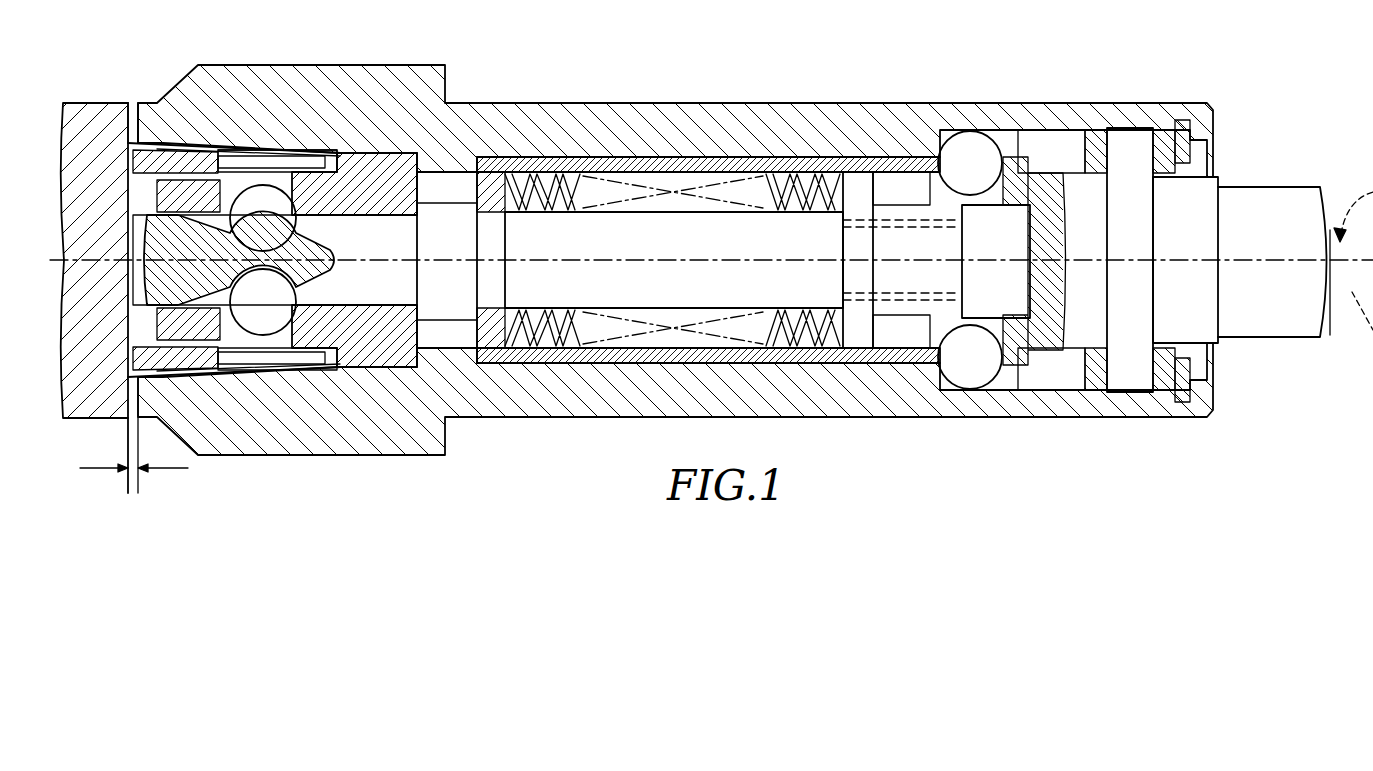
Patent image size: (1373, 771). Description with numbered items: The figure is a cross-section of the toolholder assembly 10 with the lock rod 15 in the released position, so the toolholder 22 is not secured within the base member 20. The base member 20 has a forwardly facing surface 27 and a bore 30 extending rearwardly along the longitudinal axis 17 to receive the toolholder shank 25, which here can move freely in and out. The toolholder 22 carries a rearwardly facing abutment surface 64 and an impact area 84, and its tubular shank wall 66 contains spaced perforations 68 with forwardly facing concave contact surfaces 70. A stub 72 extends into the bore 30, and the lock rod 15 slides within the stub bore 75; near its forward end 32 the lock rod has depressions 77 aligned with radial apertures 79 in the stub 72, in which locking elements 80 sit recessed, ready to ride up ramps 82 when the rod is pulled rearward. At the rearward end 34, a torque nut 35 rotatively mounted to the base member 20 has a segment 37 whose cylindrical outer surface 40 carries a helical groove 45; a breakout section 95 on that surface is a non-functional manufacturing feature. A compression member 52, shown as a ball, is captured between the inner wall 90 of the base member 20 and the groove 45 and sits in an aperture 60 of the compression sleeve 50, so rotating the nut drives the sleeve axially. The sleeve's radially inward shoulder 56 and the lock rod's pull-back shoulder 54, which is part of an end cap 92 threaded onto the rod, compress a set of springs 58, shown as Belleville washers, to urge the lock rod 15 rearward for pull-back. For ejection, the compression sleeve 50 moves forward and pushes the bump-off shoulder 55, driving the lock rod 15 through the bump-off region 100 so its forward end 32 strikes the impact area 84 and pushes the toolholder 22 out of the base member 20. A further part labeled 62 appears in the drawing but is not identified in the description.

The toolholder assembly 10 is at (737, 42).
The lock rod 15 is at (605, 235).
The longitudinal axis 17 is at (461, 245).
The base member 20 is at (645, 104).
The toolholder 22 is at (127, 104).
The toolholder shank 25 is at (283, 157).
The forwardly facing surface 27 is at (137, 108).
The bore 30 is at (160, 140).
The forward end 32 is at (118, 283).
The rearward end 34 is at (893, 232).
The torque nut 35 is at (1263, 205).
The segment 37 is at (1073, 188).
The outer surface 40 is at (1092, 222).
The groove 45 is at (978, 210).
The compression sleeve 50 is at (534, 160).
The compression member 52 is at (962, 152).
The pull-back shoulder 54 is at (856, 192).
The bump-off shoulder 55 is at (461, 350).
The shoulder 56 is at (481, 165).
The springs 58 is at (765, 215).
The aperture 60 is at (925, 157).
The sleeve end 62 is at (822, 160).
The rearwardly facing abutment surface 64 is at (131, 108).
The shank wall 66 is at (320, 155).
The spaced perforations 68 is at (232, 155).
The forwardly facing concave contact surfaces 70 is at (230, 185).
The stub 72 is at (377, 157).
The stub bore 75 is at (235, 302).
The depressions 77 is at (320, 222).
The radial apertures 79 is at (217, 165).
The locking elements 80 is at (216, 195).
The ramps 82 is at (215, 318).
The impact area 84 is at (120, 190).
The inner wall 90 is at (1072, 140).
The end cap 92 is at (880, 284).
The breakout section 95 is at (937, 202).
The bump-off region 100 is at (178, 470).